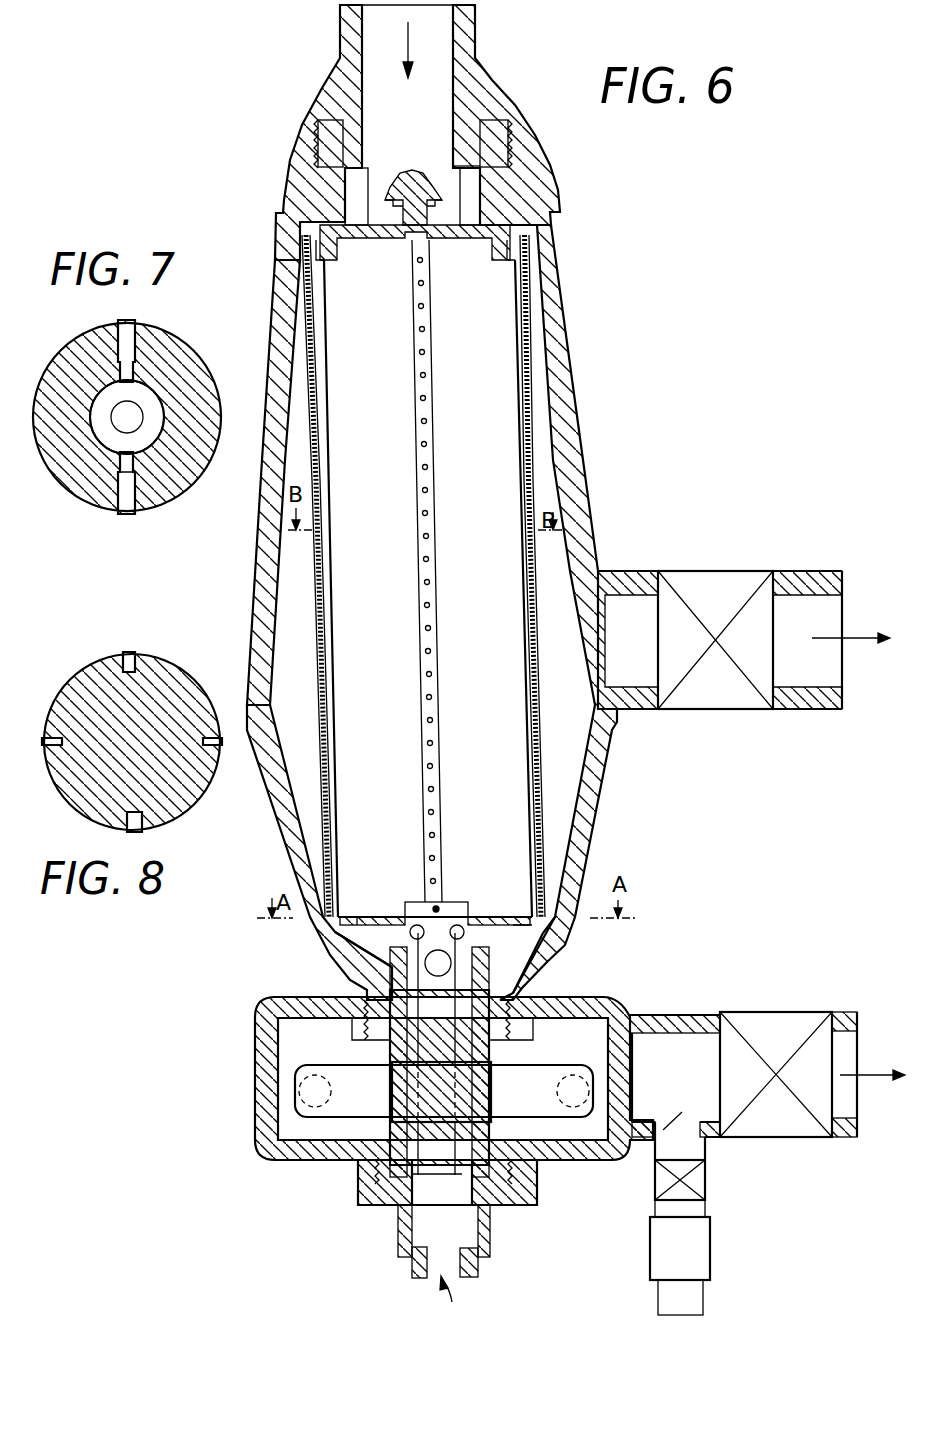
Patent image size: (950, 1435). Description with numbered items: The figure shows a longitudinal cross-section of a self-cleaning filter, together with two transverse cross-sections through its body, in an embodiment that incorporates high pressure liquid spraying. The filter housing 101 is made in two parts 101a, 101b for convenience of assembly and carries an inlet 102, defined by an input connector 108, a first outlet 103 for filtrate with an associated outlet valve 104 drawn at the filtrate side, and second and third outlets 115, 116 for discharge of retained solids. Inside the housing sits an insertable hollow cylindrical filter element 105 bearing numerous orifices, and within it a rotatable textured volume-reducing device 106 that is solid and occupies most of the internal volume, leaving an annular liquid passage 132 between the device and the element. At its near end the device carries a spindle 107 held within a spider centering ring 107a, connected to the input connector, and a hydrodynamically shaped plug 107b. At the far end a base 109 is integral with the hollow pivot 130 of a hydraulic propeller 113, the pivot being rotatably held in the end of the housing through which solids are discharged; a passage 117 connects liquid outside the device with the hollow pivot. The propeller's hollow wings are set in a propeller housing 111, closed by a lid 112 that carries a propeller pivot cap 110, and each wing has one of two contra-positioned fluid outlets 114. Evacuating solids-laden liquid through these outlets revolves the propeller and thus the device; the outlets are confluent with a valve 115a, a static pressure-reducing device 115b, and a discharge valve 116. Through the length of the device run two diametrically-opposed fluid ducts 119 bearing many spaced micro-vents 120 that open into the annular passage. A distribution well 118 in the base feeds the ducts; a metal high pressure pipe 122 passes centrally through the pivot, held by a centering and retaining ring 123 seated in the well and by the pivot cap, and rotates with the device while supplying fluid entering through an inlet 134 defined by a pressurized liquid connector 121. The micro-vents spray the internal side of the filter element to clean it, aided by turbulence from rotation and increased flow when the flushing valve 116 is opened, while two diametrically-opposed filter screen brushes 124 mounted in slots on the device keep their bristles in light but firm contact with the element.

In FIG. 6, the filter housing 101 is at (577, 388).
In FIG. 6, the housing part 101a is at (260, 690).
In FIG. 6, the housing part 101b is at (284, 818).
In FIG. 6, the inlet 102 is at (395, 90).
In FIG. 6, the first outlet 103 is at (797, 675).
In FIG. 6, the outlet valve 104 is at (713, 695).
In FIG. 6, the filter element 105 is at (538, 550).
In FIG. 6, the rotatable textured volume-reducing device 106 is at (537, 503).
In FIG. 7, the rotatable textured volume-reducing device 106 is at (100, 335).
In FIG. 8, the rotatable textured volume-reducing device 106 is at (90, 665).
In FIG. 6, the spindle 107 is at (330, 145).
In FIG. 6, the spider centering ring 107a is at (343, 187).
In FIG. 6, the hydrodynamically shaped plug 107b is at (420, 214).
In FIG. 6, the input connector 108 is at (525, 115).
In FIG. 6, the base 109 is at (380, 913).
In FIG. 6, the propeller pivot cap 110 is at (372, 1208).
In FIG. 6, the propeller housing 111 is at (258, 1022).
In FIG. 6, the lid 112 is at (282, 1162).
In FIG. 6, the hydraulic propeller 113 is at (363, 1103).
In FIG. 6, the fluid outlets 114 is at (310, 1089).
In FIG. 6, the second outlet 115 is at (660, 1132).
In FIG. 6, the valve 115a is at (693, 1182).
In FIG. 6, the static pressure-reducing device 115b is at (695, 1253).
In FIG. 6, the third outlet 116 is at (773, 1035).
In FIG. 6, the passage 117 is at (352, 952).
In FIG. 7, the distribution well 118 is at (130, 415).
In FIG. 6, the fluid ducts 119 is at (433, 803).
In FIG. 7, the fluid ducts 119 is at (130, 473).
In FIG. 8, the fluid ducts 119 is at (136, 653).
In FIG. 6, the micro-vents 120 is at (435, 713).
In FIG. 7, the micro-vents 120 is at (133, 508).
In FIG. 8, the micro-vents 120 is at (125, 653).
In FIG. 6, the pressurized liquid connector 121 is at (400, 1255).
In FIG. 6, the high pressure pipe 122 is at (417, 1048).
In FIG. 7, the high pressure pipe 122 is at (107, 437).
In FIG. 7, the centering and retaining ring 123 is at (107, 398).
In FIG. 8, the filter screen brushes 124 is at (48, 748).
In FIG. 6, the pivot 130 is at (513, 995).
In FIG. 6, the annular liquid passage 132 is at (530, 463).
In FIG. 6, the inlet 134 is at (467, 1301).